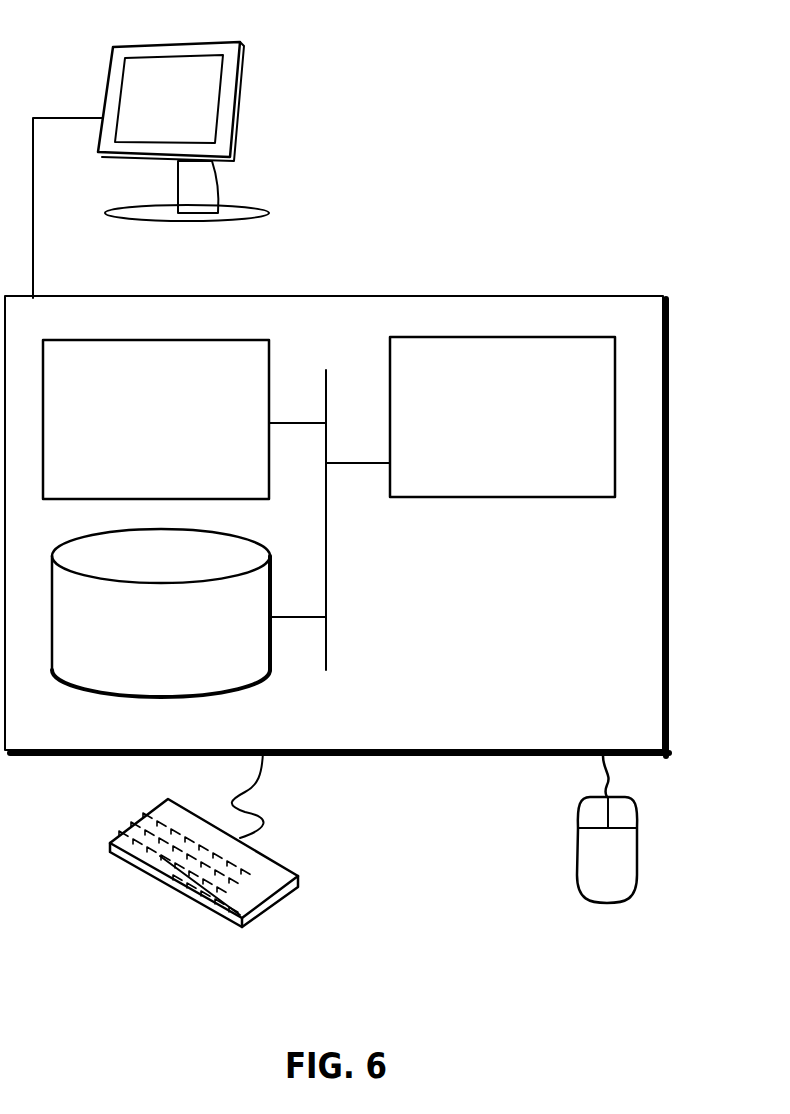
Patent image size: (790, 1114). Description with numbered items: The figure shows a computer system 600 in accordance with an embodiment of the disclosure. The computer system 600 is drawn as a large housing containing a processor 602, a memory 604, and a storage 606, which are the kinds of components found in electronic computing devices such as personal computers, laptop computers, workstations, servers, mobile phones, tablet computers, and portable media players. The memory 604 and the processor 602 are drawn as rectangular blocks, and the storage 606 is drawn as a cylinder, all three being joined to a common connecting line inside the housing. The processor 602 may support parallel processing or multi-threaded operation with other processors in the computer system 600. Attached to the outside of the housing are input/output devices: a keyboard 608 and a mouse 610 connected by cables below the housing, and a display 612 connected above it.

The computer system 600 is at (378, 273).
The processor 602 is at (486, 430).
The memory 604 is at (136, 430).
The storage 606 is at (142, 641).
The keyboard 608 is at (128, 862).
The mouse 610 is at (586, 868).
The display 612 is at (151, 170).